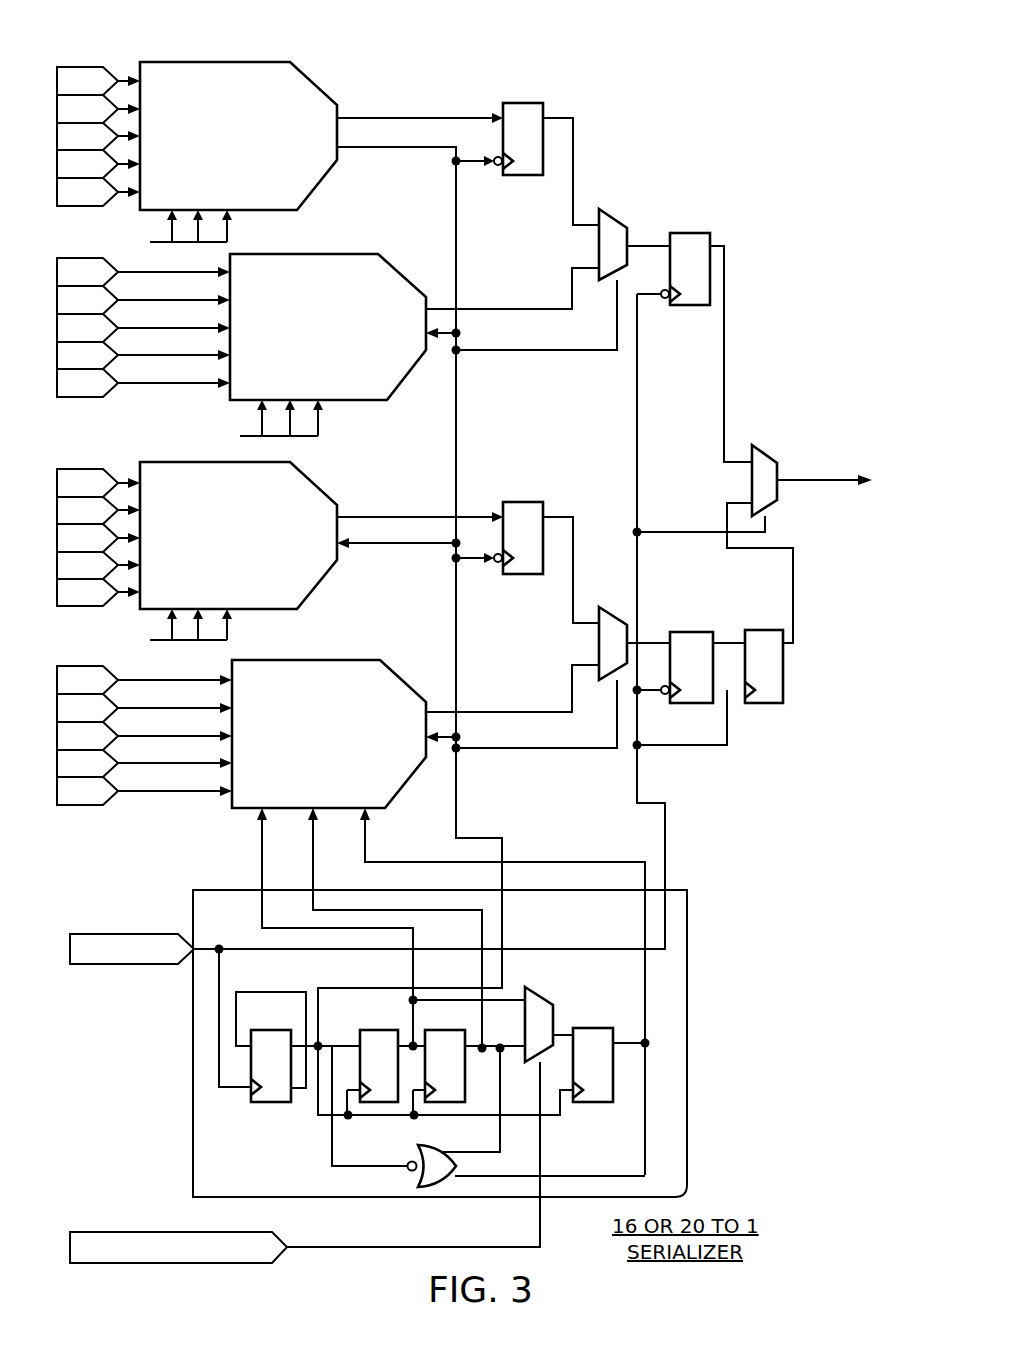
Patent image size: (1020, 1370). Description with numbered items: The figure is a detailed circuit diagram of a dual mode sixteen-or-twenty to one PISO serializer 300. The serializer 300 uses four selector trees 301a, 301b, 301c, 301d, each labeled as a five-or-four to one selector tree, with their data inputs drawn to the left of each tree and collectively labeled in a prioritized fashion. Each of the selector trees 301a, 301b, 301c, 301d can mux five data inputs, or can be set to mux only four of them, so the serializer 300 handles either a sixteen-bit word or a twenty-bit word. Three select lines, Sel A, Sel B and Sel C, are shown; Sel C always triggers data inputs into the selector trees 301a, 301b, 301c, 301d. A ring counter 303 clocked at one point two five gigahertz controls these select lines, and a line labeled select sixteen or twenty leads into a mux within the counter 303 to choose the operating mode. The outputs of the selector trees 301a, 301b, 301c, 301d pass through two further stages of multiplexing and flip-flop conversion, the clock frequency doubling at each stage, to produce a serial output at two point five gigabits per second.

The PISO serializer 300 is at (684, 83).
The selector tree 301a is at (337, 95).
The selector tree 301b is at (293, 254).
The selector tree 301c is at (306, 462).
The selector tree 301d is at (298, 660).
The ring counter 303 is at (150, 1070).